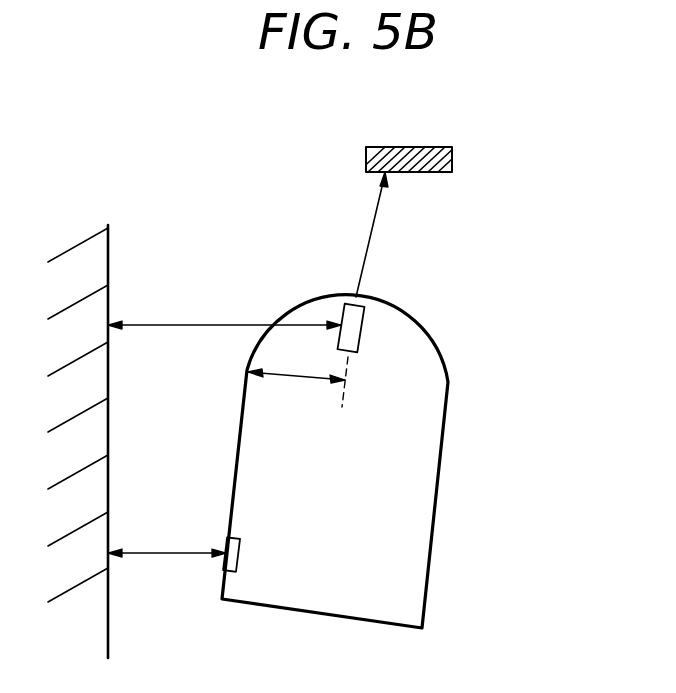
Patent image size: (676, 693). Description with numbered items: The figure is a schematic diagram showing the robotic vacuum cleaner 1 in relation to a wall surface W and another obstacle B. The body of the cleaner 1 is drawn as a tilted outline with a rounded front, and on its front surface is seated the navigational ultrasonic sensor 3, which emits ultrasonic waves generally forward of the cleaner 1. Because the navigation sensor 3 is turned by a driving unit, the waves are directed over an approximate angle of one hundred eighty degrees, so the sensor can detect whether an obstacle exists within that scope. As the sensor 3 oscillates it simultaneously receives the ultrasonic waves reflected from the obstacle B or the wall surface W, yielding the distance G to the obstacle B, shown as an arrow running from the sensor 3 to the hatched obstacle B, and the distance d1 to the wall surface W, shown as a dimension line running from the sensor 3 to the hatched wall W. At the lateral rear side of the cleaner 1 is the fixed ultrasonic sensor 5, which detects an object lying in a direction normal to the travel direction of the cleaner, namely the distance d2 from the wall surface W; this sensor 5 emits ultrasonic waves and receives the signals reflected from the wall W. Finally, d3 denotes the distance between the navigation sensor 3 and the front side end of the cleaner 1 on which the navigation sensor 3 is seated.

The robotic vacuum cleaner body 1 is at (449, 384).
The navigational ultrasonic sensor 3 is at (363, 325).
The fixed ultrasonic sensor 5 is at (225, 562).
The obstacle B is at (452, 163).
The wall surface W is at (98, 265).
The distance to obstacle G is at (366, 234).
The distance to wall surface d1 is at (224, 311).
The distance from wall surface d2 is at (167, 541).
The distance between navigation sensor and front side end d3 is at (296, 367).